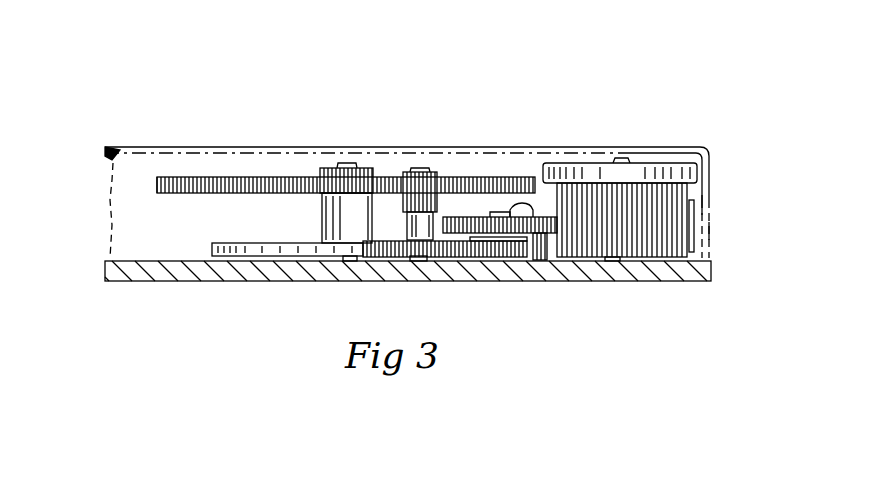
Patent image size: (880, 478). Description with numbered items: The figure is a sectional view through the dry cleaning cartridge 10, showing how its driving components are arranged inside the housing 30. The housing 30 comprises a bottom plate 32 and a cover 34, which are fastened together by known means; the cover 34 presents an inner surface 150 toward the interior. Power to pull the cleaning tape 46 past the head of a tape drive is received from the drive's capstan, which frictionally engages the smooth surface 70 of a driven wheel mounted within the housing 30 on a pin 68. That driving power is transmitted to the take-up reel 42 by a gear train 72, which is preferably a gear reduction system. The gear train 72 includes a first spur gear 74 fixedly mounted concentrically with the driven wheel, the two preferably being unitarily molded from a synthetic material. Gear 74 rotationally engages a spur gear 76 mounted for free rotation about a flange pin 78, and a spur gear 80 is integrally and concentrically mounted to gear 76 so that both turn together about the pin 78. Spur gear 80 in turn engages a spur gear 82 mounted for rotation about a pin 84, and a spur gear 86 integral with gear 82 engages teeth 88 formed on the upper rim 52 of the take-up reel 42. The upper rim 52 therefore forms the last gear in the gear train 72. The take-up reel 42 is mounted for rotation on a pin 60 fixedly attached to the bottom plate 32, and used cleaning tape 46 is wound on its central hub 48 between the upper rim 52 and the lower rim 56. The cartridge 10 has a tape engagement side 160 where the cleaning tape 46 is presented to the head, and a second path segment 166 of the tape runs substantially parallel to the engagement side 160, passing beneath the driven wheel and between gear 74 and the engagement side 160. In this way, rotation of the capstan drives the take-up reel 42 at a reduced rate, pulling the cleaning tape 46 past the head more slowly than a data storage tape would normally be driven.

The cartridge 10 is at (124, 110).
The housing 30 is at (716, 140).
The bottom plate 32 is at (182, 282).
The cover 34 is at (664, 147).
The take-up reel 42 is at (212, 165).
The cleaning tape 46 is at (694, 245).
The hub 48 is at (322, 213).
The upper rim 52 is at (178, 177).
The lower rim 56 is at (212, 248).
The pin 60 is at (348, 163).
The pin 68 is at (618, 158).
The smooth surface 70 is at (697, 173).
The gear train 72 is at (508, 150).
The first spur gear 74 is at (688, 192).
The spur gear 76 is at (546, 235).
The flange pin 78 is at (540, 235).
The spur gear 80 is at (527, 250).
The spur gear 82 is at (352, 257).
The pin 84 is at (420, 168).
The spur gear 86 is at (446, 215).
The teeth 88 is at (157, 184).
The inner surface 150 is at (108, 156).
The tape engagement side 160 is at (724, 230).
The second path segment 166 is at (712, 204).